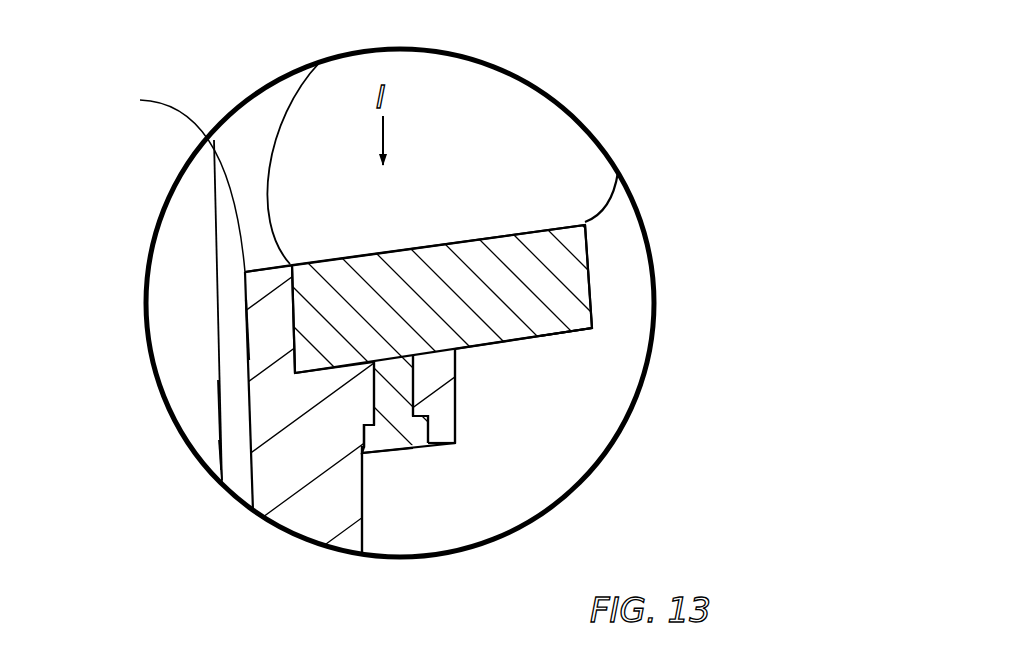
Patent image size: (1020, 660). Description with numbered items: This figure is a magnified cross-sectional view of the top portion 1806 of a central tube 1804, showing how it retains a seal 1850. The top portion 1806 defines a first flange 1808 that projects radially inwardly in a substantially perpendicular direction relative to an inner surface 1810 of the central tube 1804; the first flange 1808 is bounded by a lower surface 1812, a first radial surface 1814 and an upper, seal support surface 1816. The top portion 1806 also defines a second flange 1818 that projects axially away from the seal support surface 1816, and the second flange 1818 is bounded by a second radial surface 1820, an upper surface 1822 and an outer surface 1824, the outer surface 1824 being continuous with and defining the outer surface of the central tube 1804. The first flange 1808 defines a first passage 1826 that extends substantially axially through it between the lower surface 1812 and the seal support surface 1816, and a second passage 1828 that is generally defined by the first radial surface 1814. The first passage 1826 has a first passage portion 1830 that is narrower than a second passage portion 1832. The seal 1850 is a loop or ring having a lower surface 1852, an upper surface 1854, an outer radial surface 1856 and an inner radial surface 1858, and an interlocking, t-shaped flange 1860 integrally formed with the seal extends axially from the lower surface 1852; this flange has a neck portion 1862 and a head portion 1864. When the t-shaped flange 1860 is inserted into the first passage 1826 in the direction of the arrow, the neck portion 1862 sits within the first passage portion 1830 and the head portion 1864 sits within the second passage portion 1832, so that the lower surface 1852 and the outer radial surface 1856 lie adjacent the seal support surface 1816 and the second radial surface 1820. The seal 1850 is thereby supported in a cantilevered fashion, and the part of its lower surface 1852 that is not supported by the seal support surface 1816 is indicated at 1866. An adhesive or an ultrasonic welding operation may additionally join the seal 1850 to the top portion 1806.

The central tube 1804 is at (213, 442).
The top portion 1806 is at (185, 268).
The first flange 1808 is at (310, 435).
The inner surface 1810 is at (365, 528).
The lower surface 1812 is at (452, 443).
The first radial surface 1814 is at (393, 407).
The upper, seal support surface 1816 is at (322, 373).
The second flange 1818 is at (270, 337).
The second radial surface 1820 is at (290, 290).
The upper surface 1822 is at (167, 180).
The outer surface 1824 is at (222, 462).
The first passage 1826 is at (362, 402).
The second passage 1828 is at (605, 380).
The first passage portion 1830 is at (401, 370).
The second passage portion 1832 is at (368, 440).
The seal 1850 is at (620, 268).
The lower surface 1852 is at (567, 335).
The upper surface 1854 is at (585, 222).
The outer radial surface 1856 is at (297, 312).
The inner radial surface 1858 is at (587, 250).
The interlocking, t-shaped flange 1860 is at (387, 372).
The neck portion 1862 is at (440, 437).
The head portion 1864 is at (445, 445).
The unsupported portion of the lower surface 1866 is at (592, 337).